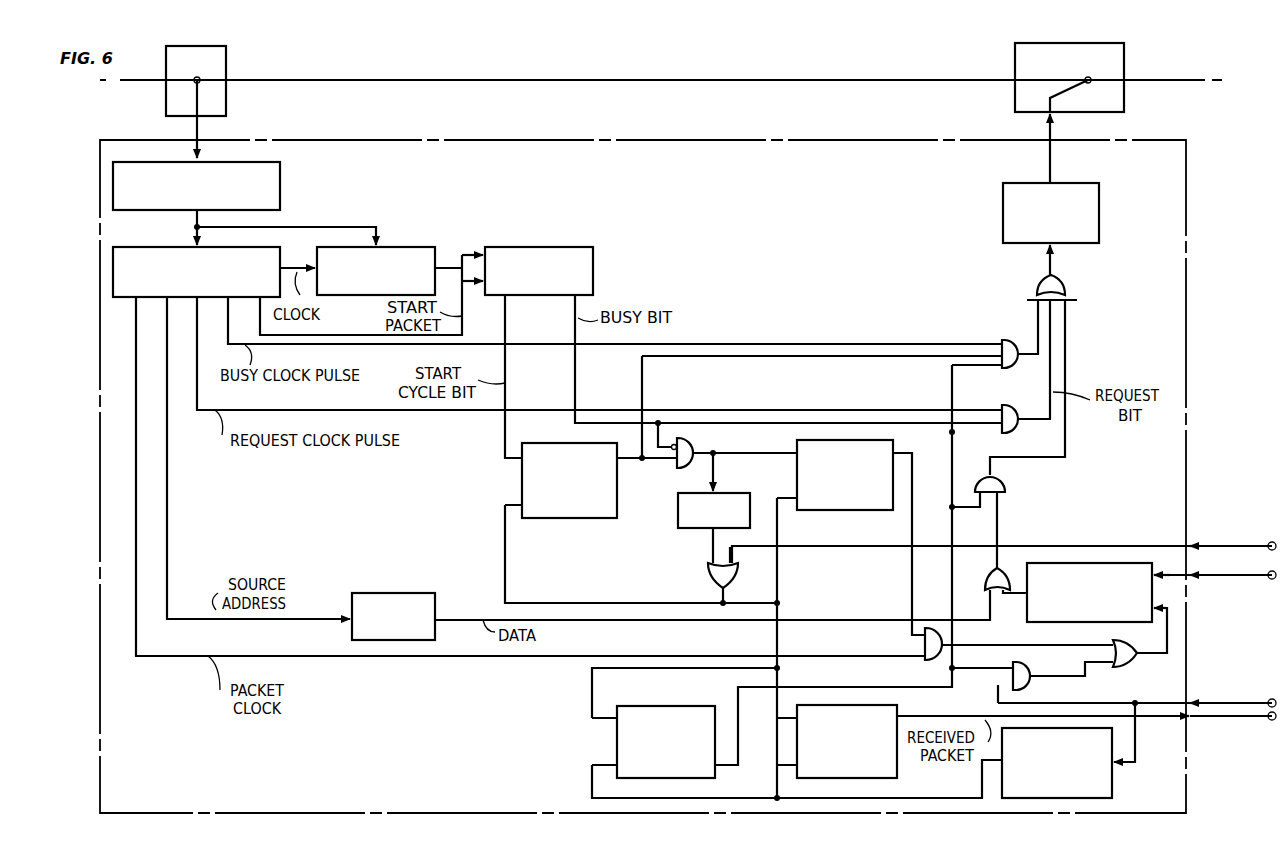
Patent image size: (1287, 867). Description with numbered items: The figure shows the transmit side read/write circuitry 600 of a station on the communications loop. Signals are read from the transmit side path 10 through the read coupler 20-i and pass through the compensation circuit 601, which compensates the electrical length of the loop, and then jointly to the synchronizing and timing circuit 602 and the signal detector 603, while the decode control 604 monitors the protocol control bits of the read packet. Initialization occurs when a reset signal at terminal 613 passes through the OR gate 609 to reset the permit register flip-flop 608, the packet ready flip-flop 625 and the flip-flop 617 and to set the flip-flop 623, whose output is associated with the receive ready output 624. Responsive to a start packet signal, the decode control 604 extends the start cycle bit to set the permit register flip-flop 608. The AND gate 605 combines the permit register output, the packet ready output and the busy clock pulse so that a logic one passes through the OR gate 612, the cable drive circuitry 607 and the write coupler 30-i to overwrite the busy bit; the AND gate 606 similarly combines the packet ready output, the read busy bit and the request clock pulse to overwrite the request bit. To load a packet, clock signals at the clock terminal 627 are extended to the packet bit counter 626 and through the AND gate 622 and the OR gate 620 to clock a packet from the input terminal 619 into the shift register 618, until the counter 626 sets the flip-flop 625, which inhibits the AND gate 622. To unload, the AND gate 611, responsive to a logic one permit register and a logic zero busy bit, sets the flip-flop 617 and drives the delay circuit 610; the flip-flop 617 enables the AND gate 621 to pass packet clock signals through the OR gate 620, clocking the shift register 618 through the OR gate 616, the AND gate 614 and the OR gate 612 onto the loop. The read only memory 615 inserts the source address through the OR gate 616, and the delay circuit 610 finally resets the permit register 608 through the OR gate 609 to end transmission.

The transmit side path 10 is at (150, 83).
The read coupler 20-i is at (228, 66).
The write coupler 30-i is at (1124, 50).
The transmit side read/write circuitry 600 is at (720, 140).
The compensation circuit 601 is at (282, 192).
The synchronizing and timing circuit 602 is at (174, 245).
The signal detector 603 is at (405, 247).
The decode control 604 is at (555, 247).
The AND gate 605 is at (1004, 338).
The AND gate 606 is at (1012, 406).
The cable drive circuitry 607 is at (1100, 206).
The permit register flip-flop 608 is at (585, 518).
The OR gate 609 is at (708, 576).
The delay circuit 610 is at (678, 506).
The AND gate 611 is at (693, 442).
The OR gate 612 is at (1066, 287).
The reset terminal 613 is at (1272, 542).
The AND gate 614 is at (1006, 482).
The read only memory (ROM) 615 is at (393, 593).
The OR gate 616 is at (992, 566).
The flip-flop 617 is at (840, 510).
The shift register 618 is at (1027, 616).
The input terminal 619 is at (1268, 572).
The OR gate 620 is at (1133, 666).
The AND gate 621 is at (922, 665).
The AND gate 622 is at (1030, 688).
The flip-flop 623 is at (897, 776).
The receive ready output 624 is at (1272, 721).
The packet ready flip-flop 625 is at (660, 706).
The packet bit counter 626 is at (1112, 780).
The clock terminal 627 is at (1270, 699).